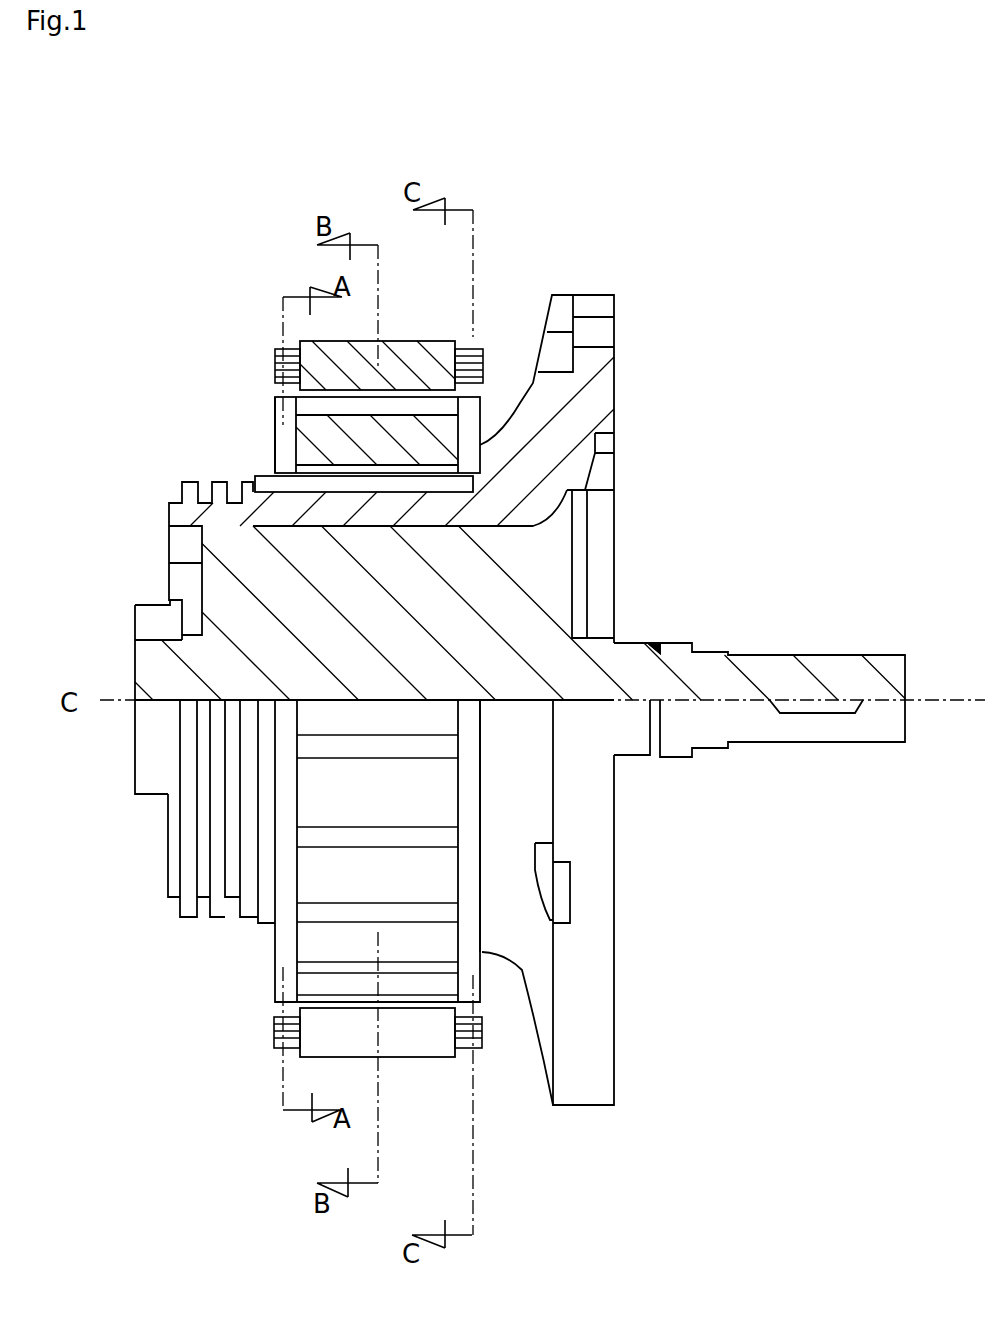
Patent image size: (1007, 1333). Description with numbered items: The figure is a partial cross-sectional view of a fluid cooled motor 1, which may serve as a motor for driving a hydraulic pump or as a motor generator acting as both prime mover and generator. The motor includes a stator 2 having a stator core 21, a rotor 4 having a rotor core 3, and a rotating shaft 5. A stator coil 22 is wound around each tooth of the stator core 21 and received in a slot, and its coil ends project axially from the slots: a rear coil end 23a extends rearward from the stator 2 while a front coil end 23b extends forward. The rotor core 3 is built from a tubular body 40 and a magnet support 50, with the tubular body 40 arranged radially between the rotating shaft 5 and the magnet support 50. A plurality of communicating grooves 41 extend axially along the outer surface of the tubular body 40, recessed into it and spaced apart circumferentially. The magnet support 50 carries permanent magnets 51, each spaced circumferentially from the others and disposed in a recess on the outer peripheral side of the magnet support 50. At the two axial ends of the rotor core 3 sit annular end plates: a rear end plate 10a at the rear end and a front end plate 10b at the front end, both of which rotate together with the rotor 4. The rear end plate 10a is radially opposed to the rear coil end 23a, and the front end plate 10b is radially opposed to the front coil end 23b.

The fluid cooled motor 1 is at (660, 252).
The stator 2 is at (214, 267).
The rotor core 3 is at (318, 797).
The rotor 4 is at (132, 897).
The rotating shaft 5 is at (695, 675).
The rear end plate 10a is at (285, 950).
The front end plate 10b is at (468, 937).
The stator core 21 is at (386, 348).
The stator coil 22 is at (273, 1037).
The rear coil end 23a is at (283, 357).
The front coil end 23b is at (483, 360).
The tubular body 40 is at (590, 389).
The communicating groove 41 is at (275, 470).
The magnet support 50 is at (317, 440).
The permanent magnet 51 is at (312, 407).